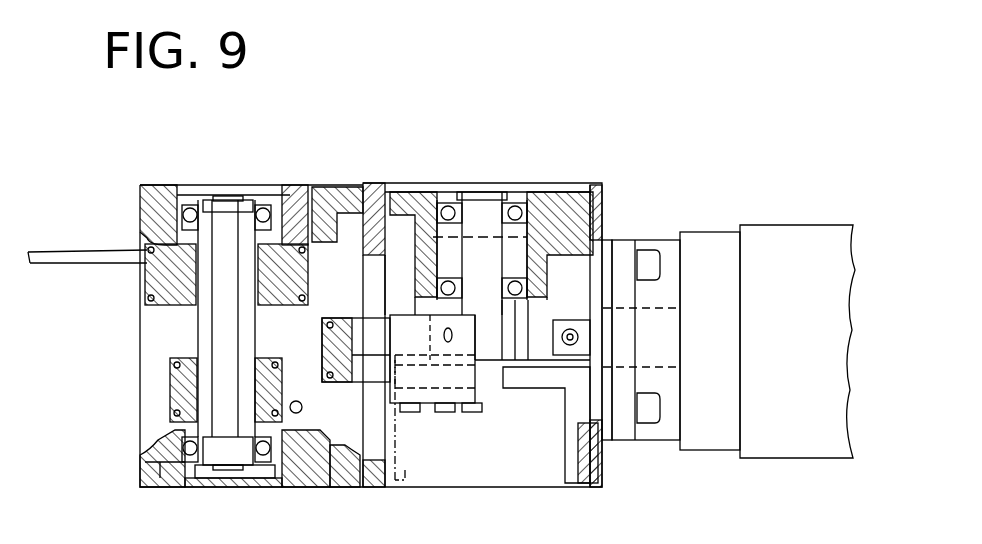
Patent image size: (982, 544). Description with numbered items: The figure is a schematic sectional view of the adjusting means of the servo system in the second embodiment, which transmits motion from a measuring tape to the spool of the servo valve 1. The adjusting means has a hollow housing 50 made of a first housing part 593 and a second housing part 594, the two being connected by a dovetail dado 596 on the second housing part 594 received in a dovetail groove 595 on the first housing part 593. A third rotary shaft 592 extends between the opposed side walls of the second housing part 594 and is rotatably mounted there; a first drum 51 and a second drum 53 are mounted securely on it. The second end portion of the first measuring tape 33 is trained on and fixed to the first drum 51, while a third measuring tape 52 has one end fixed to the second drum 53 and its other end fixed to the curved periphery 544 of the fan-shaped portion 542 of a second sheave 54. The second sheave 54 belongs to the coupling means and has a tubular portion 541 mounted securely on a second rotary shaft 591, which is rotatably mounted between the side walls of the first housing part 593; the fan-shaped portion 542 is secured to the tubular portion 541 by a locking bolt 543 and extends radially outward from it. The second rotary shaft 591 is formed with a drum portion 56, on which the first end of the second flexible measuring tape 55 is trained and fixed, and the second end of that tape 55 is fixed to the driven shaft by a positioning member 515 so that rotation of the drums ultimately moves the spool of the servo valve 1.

The servo valve 1 is at (705, 240).
The first measuring tape 33 is at (55, 250).
The hollow housing 50 is at (590, 178).
The first drum 51 is at (165, 275).
The third measuring tape 52 is at (312, 445).
The second drum 53 is at (178, 385).
The second sheave 54 is at (400, 410).
The second flexible measuring tape 55 is at (490, 345).
The drum portion 56 is at (525, 345).
The positioning member 515 is at (575, 338).
The tubular portion 541 is at (545, 380).
The fan-shaped portion 542 is at (375, 470).
The locking bolt 543 is at (445, 412).
The curved periphery 544 is at (322, 343).
The second rotary shaft 591 is at (482, 213).
The third rotary shaft 592 is at (245, 245).
The first housing part 593 is at (358, 185).
The second housing part 594 is at (165, 185).
The dovetail groove 595 is at (312, 200).
The dovetail dado 596 is at (300, 205).